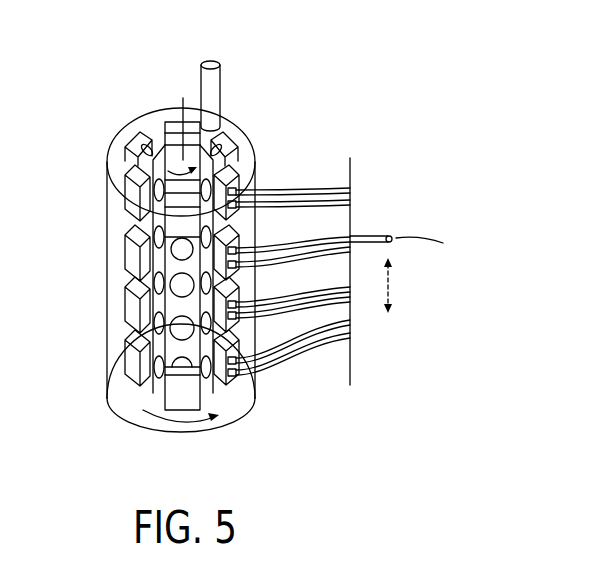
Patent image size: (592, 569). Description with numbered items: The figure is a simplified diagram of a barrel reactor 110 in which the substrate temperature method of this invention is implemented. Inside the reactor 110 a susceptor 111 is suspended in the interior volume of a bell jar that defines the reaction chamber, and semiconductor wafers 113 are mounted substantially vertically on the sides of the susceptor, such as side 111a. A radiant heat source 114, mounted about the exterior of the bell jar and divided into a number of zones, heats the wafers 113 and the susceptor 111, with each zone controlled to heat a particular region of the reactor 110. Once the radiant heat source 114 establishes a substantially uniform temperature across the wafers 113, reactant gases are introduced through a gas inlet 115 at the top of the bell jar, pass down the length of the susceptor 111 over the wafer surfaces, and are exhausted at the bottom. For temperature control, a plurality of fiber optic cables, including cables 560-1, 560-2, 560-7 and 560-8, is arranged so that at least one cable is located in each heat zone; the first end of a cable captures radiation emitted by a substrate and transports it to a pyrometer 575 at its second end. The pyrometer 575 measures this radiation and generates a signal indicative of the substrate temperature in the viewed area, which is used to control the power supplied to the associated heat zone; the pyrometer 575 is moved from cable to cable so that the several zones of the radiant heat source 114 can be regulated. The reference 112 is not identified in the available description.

The barrel reactor 110 is at (296, 76).
The susceptor 111 is at (159, 148).
The side of susceptor 111a is at (176, 352).
The housing 112 is at (107, 210).
The semiconductor wafers 113 is at (179, 288).
The radiant heat source 114 is at (130, 258).
The gas inlet 115 is at (215, 90).
The fiber optic cable 560-1 is at (305, 353).
The fiber optic cable 560-2 is at (281, 357).
The fiber optic cable 560-7 is at (308, 210).
The fiber optic cable 560-8 is at (279, 190).
The pyrometer 575 is at (367, 232).